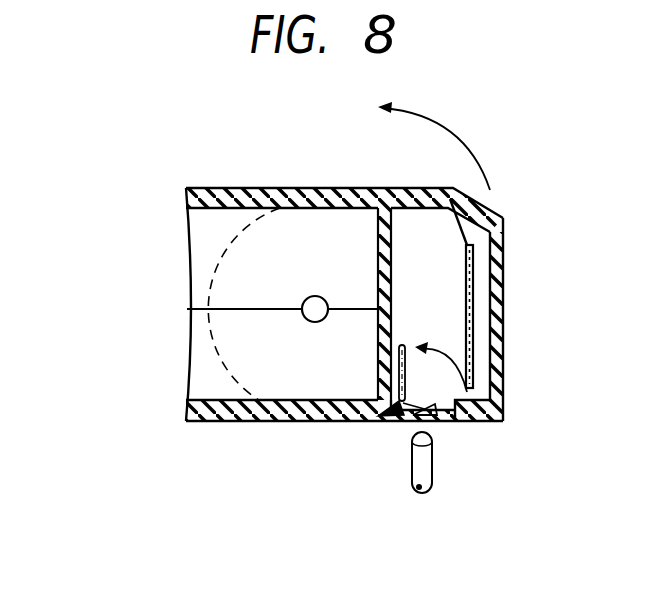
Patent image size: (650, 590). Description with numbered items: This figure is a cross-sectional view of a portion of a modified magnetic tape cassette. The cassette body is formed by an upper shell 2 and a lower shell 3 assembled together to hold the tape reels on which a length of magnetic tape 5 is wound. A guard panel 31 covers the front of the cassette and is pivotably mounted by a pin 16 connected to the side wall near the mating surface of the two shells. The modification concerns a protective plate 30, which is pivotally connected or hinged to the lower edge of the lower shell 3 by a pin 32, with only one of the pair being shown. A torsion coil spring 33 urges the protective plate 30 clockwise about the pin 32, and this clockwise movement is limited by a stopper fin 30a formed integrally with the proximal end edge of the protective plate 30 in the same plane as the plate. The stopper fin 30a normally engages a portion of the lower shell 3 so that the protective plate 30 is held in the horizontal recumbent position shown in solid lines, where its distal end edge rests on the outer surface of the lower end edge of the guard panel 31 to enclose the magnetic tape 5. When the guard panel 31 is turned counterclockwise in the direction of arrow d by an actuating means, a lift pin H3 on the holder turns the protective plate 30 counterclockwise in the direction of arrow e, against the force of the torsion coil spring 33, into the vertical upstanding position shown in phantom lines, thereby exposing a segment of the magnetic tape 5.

The upper shell 2 is at (272, 188).
The lower shell 3 is at (268, 422).
The magnetic tape 5 is at (472, 279).
The pin 16 is at (318, 296).
The protective plate 30 is at (457, 423).
The stopper fin 30a is at (383, 412).
The guard panel 31 is at (503, 334).
The pin 32 is at (392, 405).
The torsion coil spring 33 is at (440, 420).
The lift pin H3 is at (412, 465).
The arrow d is at (446, 139).
The arrow e is at (438, 366).